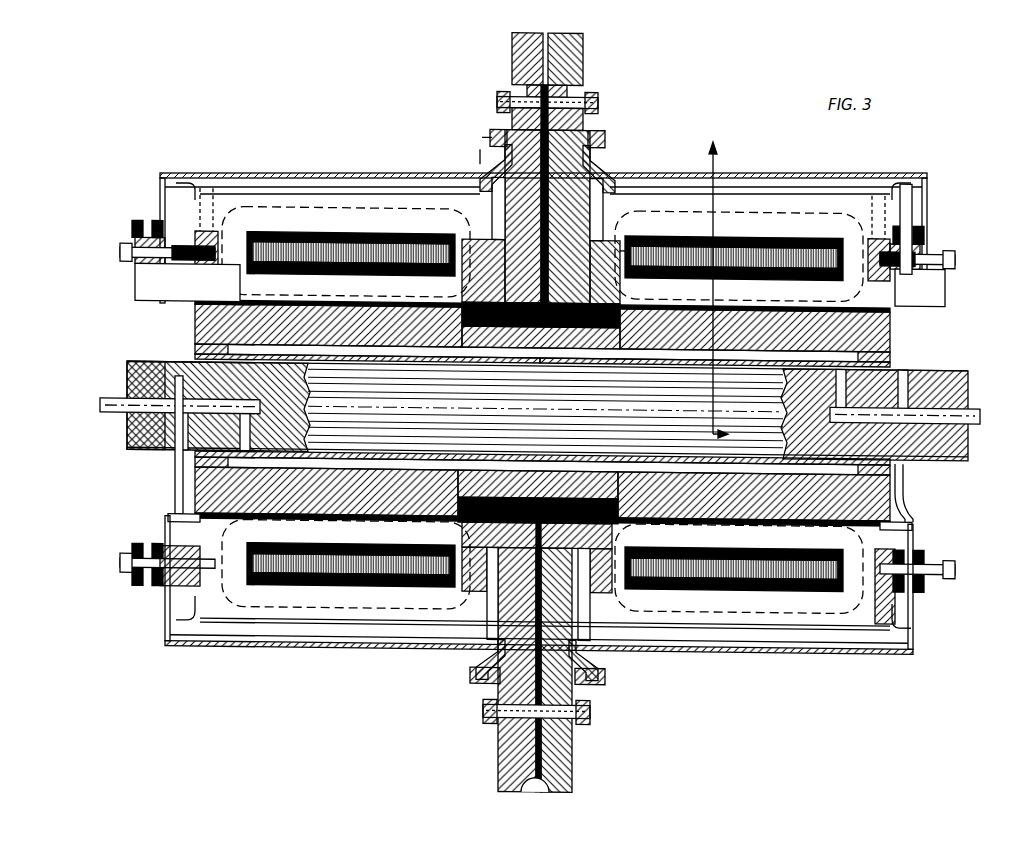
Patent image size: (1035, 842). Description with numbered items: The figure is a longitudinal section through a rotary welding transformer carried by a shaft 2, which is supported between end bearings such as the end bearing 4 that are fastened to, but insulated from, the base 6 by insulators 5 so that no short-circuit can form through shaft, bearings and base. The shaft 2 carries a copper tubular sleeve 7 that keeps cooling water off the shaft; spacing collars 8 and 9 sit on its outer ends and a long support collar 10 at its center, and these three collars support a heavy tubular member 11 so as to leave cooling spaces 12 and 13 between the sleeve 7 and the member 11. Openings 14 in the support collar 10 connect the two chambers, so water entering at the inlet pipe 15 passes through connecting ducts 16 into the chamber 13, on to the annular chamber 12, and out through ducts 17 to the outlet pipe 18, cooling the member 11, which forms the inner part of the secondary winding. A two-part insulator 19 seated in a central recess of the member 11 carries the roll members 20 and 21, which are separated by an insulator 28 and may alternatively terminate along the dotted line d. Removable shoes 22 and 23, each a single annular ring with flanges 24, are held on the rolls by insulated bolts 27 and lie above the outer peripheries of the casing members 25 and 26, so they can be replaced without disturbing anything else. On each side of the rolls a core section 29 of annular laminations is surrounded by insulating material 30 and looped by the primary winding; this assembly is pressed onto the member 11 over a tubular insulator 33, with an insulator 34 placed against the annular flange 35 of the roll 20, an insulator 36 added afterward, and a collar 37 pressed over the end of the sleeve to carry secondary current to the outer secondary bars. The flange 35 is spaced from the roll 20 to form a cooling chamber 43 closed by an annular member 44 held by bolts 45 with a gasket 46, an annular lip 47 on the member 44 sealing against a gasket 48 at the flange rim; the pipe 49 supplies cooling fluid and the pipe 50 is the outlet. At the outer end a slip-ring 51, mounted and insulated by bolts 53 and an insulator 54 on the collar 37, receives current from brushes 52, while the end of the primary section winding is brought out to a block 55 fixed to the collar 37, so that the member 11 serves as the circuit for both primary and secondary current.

The shaft 2 is at (128, 368).
The end bearing 4 is at (723, 290).
The insulator 5 is at (477, 149).
The base 6 is at (205, 190).
The tubular sleeve 7 is at (300, 465).
The spacing collar 8 is at (194, 354).
The spacing collar 9 is at (892, 353).
The support collar 10 is at (470, 358).
The heavy tubular member 11 is at (194, 329).
The cooling space 12 is at (372, 366).
The cooling space 13 is at (728, 351).
The openings 14 is at (600, 356).
The inlet pipe 15 is at (980, 418).
The connecting duct 16 is at (790, 387).
The duct 17 is at (255, 432).
The outlet pipe 18 is at (110, 418).
The insulator 19 is at (600, 290).
The roll member 20 is at (492, 170).
The roll member 21 is at (605, 170).
The removable shoe 22 is at (511, 57).
The removable shoe 23 is at (584, 57).
The flange 24 is at (526, 88).
The bolt 27 is at (600, 104).
The insulator 28 is at (580, 140).
The core section 29 is at (335, 248).
The insulating material 30 is at (268, 234).
The tubular insulator 33 is at (278, 297).
The insulator 34 is at (466, 250).
The annular flange 35 is at (470, 280).
The insulator 36 is at (215, 570).
The collar 37 is at (175, 592).
The cooling chamber 43 is at (492, 205).
The annular member 44 is at (492, 140).
The bolt 45 is at (488, 136).
The gasket 46 is at (478, 684).
The annular lip 47 is at (475, 643).
The gasket 48 is at (482, 664).
The pipe 49 is at (282, 178).
The pipe 50 is at (235, 642).
The slip-ring 51 is at (135, 592).
The brush 52 is at (136, 224).
The bolt 53 is at (120, 257).
The insulator 54 is at (150, 290).
The block 55 is at (174, 516).
The dotted line d is at (628, 251).
The casing member 25 is at (330, 177).
The casing member 26 is at (795, 177).